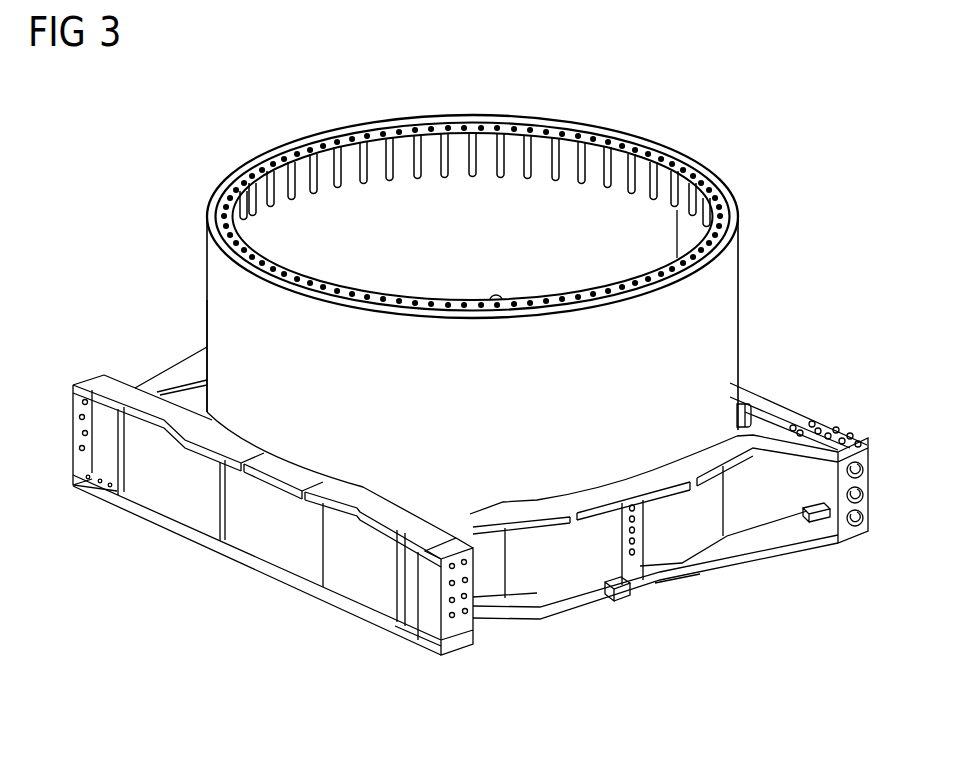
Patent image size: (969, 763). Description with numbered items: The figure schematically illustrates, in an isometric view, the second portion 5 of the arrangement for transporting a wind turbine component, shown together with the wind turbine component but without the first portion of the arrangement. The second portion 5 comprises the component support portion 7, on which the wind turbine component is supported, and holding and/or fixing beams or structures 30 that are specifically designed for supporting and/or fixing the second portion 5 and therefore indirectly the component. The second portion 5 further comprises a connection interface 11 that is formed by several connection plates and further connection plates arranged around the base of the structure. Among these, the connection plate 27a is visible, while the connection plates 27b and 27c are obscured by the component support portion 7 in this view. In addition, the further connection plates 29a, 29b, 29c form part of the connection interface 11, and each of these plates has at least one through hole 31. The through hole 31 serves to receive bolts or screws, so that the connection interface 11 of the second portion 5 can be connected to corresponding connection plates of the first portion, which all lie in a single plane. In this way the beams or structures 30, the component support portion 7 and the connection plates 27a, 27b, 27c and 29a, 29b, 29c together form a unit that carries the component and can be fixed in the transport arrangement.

The second portion 5 is at (491, 365).
The component support portion 7 is at (444, 272).
The connection interface 11 is at (455, 602).
The connection plate 27a is at (71, 455).
The connection plate 27b is at (163, 317).
The connection plate 27c is at (473, 183).
The further connection plate 29a is at (400, 604).
The further connection plate 29b is at (635, 626).
The further connection plate 29c is at (830, 518).
The holding and/or fixing beams or structures 30 is at (452, 477).
The through hole 31 is at (612, 612).